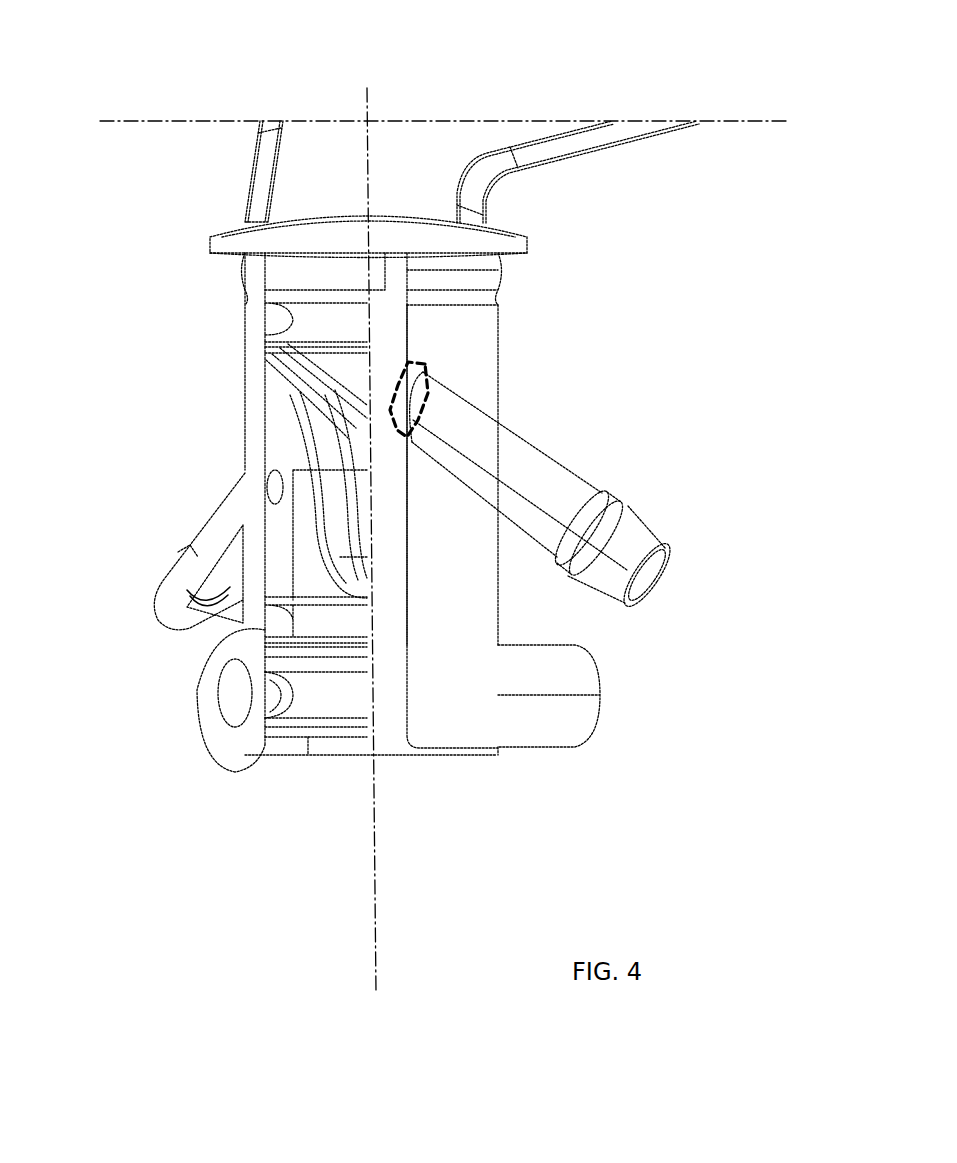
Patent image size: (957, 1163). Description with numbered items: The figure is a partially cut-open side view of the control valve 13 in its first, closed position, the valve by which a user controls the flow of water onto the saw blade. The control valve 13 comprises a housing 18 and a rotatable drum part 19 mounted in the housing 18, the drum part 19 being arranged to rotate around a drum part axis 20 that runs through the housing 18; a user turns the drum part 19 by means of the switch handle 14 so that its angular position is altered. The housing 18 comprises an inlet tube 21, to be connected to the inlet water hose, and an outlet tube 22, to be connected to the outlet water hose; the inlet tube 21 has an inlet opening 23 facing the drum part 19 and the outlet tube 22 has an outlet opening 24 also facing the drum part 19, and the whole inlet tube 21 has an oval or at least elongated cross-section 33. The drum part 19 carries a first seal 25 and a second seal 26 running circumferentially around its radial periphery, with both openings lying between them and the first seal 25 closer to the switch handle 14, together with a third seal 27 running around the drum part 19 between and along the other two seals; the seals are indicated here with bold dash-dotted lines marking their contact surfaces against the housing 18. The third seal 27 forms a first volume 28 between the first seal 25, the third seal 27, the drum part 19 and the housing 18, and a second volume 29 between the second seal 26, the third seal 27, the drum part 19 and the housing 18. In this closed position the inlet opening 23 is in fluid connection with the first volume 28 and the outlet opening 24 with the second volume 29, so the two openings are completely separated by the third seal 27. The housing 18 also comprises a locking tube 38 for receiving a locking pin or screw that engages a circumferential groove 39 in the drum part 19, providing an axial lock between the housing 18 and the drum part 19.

The control valve 13 is at (279, 85).
The switch handle 14 is at (447, 152).
The housing 18 is at (480, 337).
The drum part 19 is at (307, 507).
The drum part axis 20 is at (367, 172).
The inlet tube 21 is at (532, 455).
The outlet tube 22 is at (187, 573).
The inlet opening 23 is at (425, 362).
The outlet opening 24 is at (272, 487).
The first seal 25 is at (477, 320).
The second seal 26 is at (265, 622).
The third seal 27 is at (456, 513).
The first volume 28 is at (345, 372).
The second volume 29 is at (297, 467).
The elongated cross-section 33 is at (648, 568).
The locking tube 38 is at (228, 737).
The circumferential groove 39 is at (333, 688).